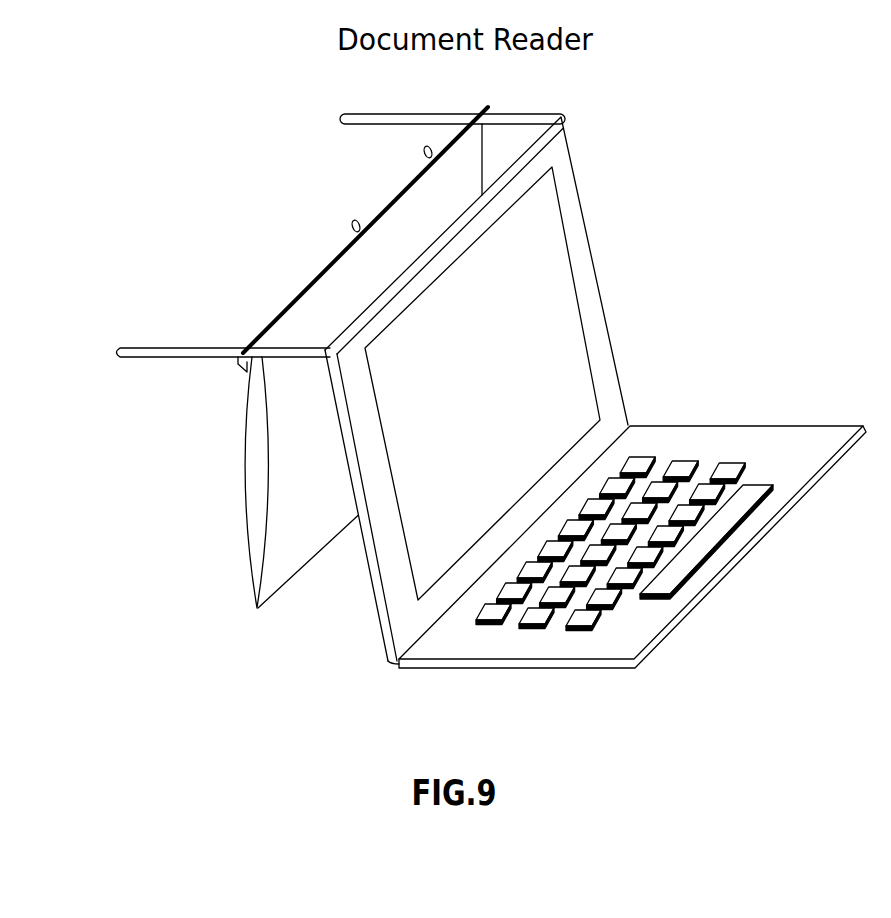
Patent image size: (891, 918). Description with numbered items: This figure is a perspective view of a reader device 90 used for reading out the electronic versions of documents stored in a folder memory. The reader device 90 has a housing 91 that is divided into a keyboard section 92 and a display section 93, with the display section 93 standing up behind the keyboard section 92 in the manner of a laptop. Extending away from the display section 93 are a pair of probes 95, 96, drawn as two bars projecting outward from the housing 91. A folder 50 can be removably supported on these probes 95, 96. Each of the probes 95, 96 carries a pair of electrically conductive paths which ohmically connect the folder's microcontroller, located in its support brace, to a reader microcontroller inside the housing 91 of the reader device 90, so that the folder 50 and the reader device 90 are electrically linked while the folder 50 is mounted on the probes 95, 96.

The folder 50 is at (232, 456).
The reader device 90 is at (630, 347).
The housing 91 is at (357, 590).
The keyboard section 92 is at (732, 437).
The display section 93 is at (585, 260).
The probe 95 is at (198, 347).
The probe 96 is at (372, 113).